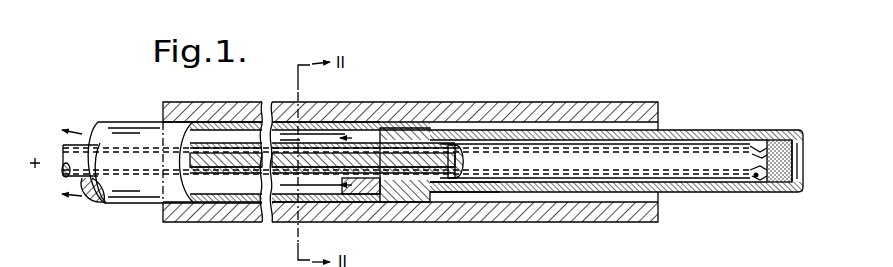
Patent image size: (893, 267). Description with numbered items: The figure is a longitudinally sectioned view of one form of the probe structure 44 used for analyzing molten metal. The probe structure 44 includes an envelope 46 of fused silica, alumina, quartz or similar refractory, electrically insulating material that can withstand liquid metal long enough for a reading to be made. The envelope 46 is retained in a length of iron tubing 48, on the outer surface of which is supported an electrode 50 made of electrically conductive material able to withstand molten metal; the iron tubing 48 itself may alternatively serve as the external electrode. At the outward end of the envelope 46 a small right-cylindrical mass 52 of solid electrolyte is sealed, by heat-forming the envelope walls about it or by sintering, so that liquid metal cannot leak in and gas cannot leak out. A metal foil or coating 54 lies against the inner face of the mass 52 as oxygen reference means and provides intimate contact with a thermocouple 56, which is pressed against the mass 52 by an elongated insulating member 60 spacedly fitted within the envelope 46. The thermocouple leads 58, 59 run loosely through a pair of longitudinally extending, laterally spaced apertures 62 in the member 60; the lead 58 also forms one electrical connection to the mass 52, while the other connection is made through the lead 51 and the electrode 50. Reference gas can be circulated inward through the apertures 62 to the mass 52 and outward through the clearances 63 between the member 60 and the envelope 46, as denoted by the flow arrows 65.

The probe structure 44 is at (656, 104).
The envelope 46 is at (674, 131).
The iron tubing 48 is at (322, 127).
The electrode 50 is at (483, 114).
The lead 51 is at (100, 240).
The mass of solid electrolyte material 52 is at (777, 150).
The metal foil or coating 54 is at (763, 158).
The thermocouple 56 is at (761, 177).
The thermocouple lead 58 is at (62, 172).
The thermocouple lead 59 is at (58, 150).
The elongated insulating member 60 is at (592, 160).
The apertures 62 is at (447, 160).
The clearances 63 is at (483, 183).
The flow arrows 65 is at (82, 197).